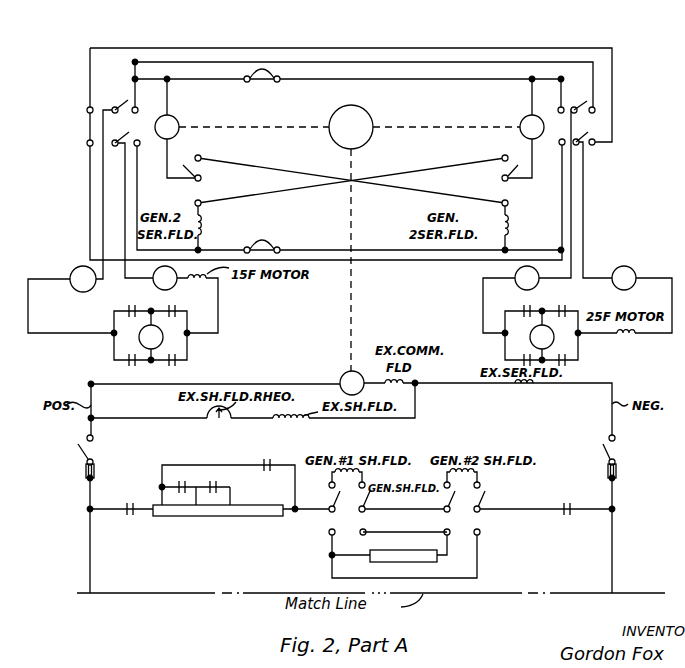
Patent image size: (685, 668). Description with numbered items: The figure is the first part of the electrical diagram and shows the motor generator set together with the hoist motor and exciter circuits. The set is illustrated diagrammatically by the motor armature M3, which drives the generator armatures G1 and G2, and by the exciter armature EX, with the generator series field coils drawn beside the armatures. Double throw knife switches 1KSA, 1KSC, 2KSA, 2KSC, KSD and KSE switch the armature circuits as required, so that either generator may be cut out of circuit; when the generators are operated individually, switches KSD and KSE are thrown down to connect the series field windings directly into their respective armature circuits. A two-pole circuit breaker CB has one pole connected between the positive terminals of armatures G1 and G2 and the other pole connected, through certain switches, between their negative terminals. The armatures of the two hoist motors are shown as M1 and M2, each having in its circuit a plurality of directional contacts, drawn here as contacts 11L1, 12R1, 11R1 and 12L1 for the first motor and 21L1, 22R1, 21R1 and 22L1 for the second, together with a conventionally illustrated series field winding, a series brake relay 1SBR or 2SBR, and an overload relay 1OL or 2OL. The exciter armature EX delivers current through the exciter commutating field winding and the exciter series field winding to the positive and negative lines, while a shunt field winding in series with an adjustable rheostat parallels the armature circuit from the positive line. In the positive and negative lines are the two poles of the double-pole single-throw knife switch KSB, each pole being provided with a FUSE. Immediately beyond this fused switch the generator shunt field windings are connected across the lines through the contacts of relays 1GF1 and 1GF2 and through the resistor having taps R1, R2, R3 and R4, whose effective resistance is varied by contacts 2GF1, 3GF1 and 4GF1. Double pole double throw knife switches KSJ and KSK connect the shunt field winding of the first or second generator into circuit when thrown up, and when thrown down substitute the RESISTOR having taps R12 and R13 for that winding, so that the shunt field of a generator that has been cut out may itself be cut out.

The double throw knife switch 1KSA is at (87, 108).
The double throw knife switch 2KSA is at (87, 141).
The double throw knife switch 1KSC is at (604, 109).
The double throw knife switch 2KSC is at (604, 140).
The generator armature G1 is at (167, 127).
The generator armature G2 is at (532, 127).
The motor armature M3 is at (351, 127).
The circuit breaker CB is at (262, 162).
The double throw knife switch KSD is at (336, 171).
The double throw knife switch KSE is at (365, 171).
The overload relay 1OL is at (83, 279).
The overload relay 2OL is at (624, 278).
The series brake relay 1SBR is at (165, 278).
The series brake relay 2SBR is at (527, 278).
The motor armature M1 is at (150, 335).
The motor armature M2 is at (541, 335).
The contact 11L1 is at (131, 307).
The contact 12R1 is at (177, 307).
The contact 11R1 is at (131, 354).
The contact 12L1 is at (173, 354).
The contact 21L1 is at (520, 307).
The contact 22R1 is at (569, 307).
The contact 21R1 is at (520, 354).
The contact 22L1 is at (564, 354).
The exciter armature EX is at (352, 383).
The double-pole single-throw knife switch KSB is at (340, 450).
The fuse FUSE is at (372, 472).
The relay contact 1GF1 is at (125, 504).
The relay contact 2GF1 is at (183, 482).
The relay contact 3GF1 is at (231, 482).
The relay contact 4GF1 is at (257, 460).
The relay contact 1GF2 is at (565, 504).
The resistor tap R1 is at (218, 510).
The resistor tap R2 is at (197, 501).
The resistor tap R3 is at (229, 501).
The resistor tap R4 is at (296, 517).
The double pole double throw knife switch KSJ is at (349, 504).
The double pole double throw knife switch KSK is at (464, 504).
The resistor tap R12 is at (403, 553).
The resistor tap R13 is at (420, 542).
The resistor RESISTOR is at (403, 556).